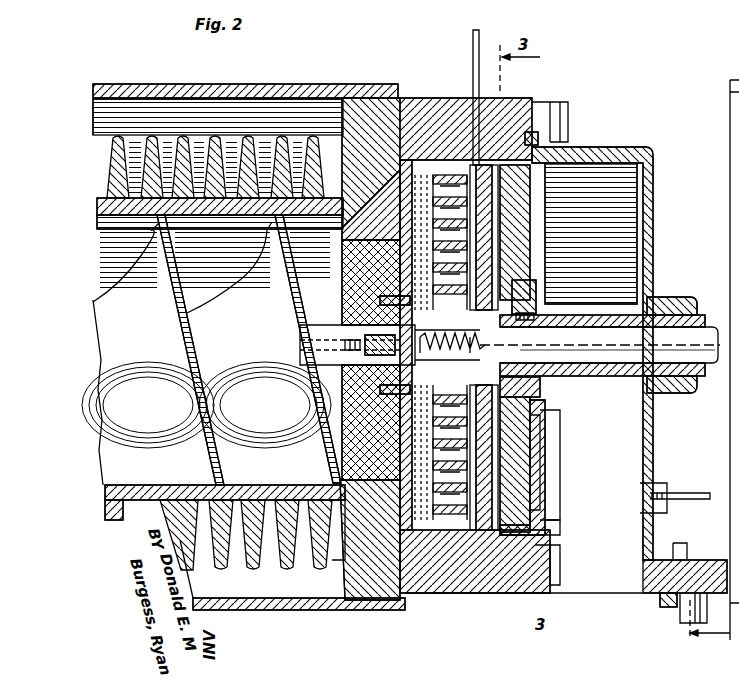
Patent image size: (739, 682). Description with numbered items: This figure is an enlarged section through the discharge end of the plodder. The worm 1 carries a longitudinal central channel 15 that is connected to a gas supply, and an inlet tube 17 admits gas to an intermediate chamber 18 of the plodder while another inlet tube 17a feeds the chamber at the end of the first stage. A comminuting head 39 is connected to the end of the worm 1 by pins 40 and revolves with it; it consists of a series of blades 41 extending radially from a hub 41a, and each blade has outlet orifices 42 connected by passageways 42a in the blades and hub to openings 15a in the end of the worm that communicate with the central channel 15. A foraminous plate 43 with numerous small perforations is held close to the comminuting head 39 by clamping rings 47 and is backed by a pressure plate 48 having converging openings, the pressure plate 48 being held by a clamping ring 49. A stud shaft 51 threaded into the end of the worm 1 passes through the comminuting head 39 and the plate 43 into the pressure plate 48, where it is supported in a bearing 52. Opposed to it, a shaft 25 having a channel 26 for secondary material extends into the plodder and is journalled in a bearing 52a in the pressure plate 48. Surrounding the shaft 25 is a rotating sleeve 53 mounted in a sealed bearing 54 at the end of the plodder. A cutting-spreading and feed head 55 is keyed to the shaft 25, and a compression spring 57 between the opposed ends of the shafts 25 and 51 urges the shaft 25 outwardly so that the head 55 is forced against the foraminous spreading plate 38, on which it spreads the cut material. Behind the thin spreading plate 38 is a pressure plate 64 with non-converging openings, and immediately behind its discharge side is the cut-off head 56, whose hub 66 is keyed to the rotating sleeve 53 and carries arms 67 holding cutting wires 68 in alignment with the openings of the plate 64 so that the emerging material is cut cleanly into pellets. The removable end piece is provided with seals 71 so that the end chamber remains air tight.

The worm 1 is at (195, 415).
The longitudinal central channel 15 is at (345, 345).
The openings 15a is at (340, 355).
The inlet tube 17 is at (472, 38).
The inlet tube 17a is at (685, 492).
The intermediate chamber 18 is at (470, 560).
The shaft 25 is at (718, 325).
The channel 26 is at (628, 376).
The foraminous spreading plate 38 is at (500, 570).
The comminuting head 39 is at (390, 548).
The pins 40 is at (342, 285).
The blades 41 is at (433, 470).
The hub 41a is at (380, 355).
The outlet orifices 42 is at (433, 490).
The passageways 42a is at (380, 390).
The foraminous plate 43 is at (420, 570).
The clamping rings 47 is at (425, 175).
The pressure plate 48 is at (445, 570).
The clamping ring 49 is at (480, 165).
The stud shaft 51 is at (365, 350).
The bearing 52 is at (470, 440).
The bearing 52a is at (545, 380).
The rotating sleeve 53 is at (606, 373).
The sealed bearing 54 is at (676, 393).
The cutting-spreading and feed head 55 is at (530, 440).
The cut-off head 56 is at (545, 292).
The compression spring 57 is at (500, 343).
The pressure plate 64 is at (545, 533).
The hub 66 is at (540, 300).
The arms 67 is at (560, 488).
The cutting wires 68 is at (540, 505).
The seals 71 is at (540, 138).